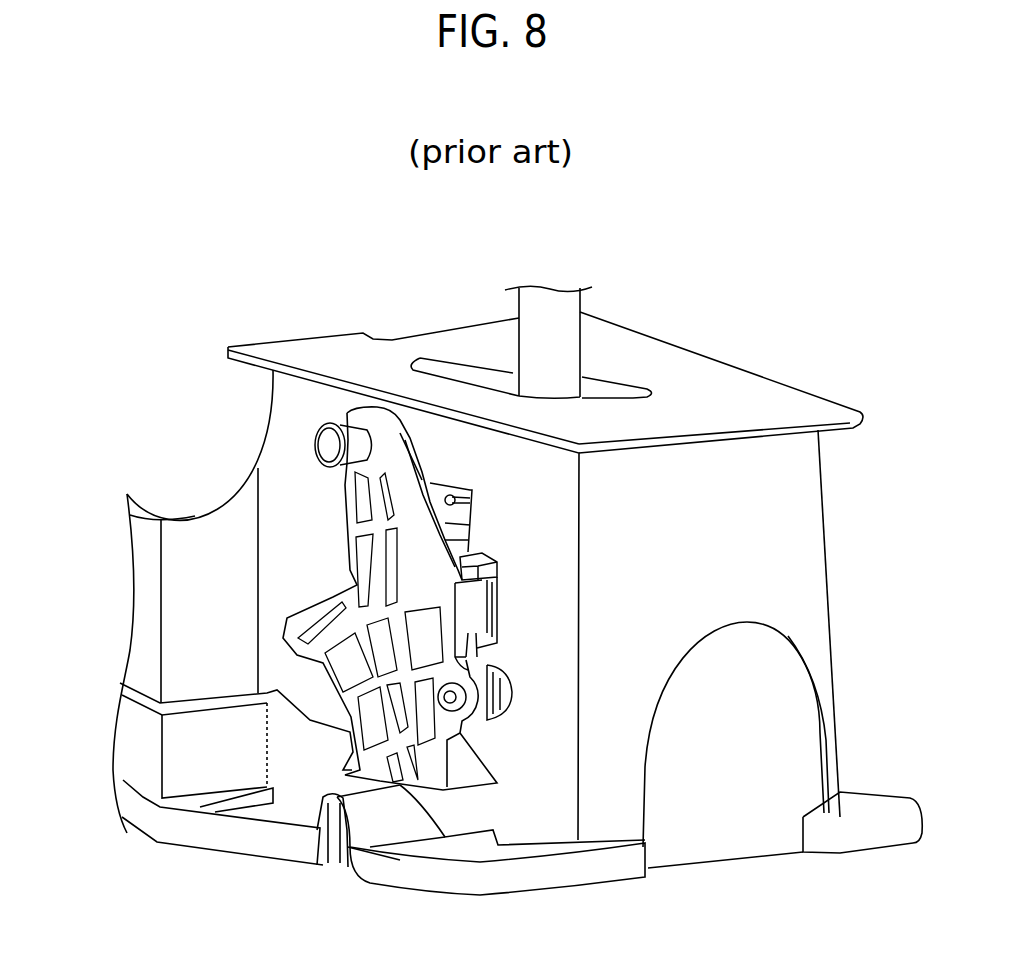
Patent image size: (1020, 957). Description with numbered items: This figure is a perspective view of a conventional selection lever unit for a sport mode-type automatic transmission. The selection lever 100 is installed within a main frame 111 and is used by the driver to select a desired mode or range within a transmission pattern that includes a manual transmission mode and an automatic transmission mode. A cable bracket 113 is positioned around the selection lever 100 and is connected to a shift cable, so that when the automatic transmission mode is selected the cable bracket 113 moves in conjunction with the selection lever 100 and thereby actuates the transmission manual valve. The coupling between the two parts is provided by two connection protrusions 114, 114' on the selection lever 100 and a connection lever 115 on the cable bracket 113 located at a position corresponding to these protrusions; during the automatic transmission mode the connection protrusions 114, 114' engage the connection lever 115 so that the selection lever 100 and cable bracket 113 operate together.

The selection lever 100 is at (522, 300).
The main frame 111 is at (810, 562).
The cable bracket 113 is at (352, 588).
The connection protrusion 114 is at (569, 623).
The connection protrusion 114' is at (541, 517).
The connection lever 115 is at (497, 558).